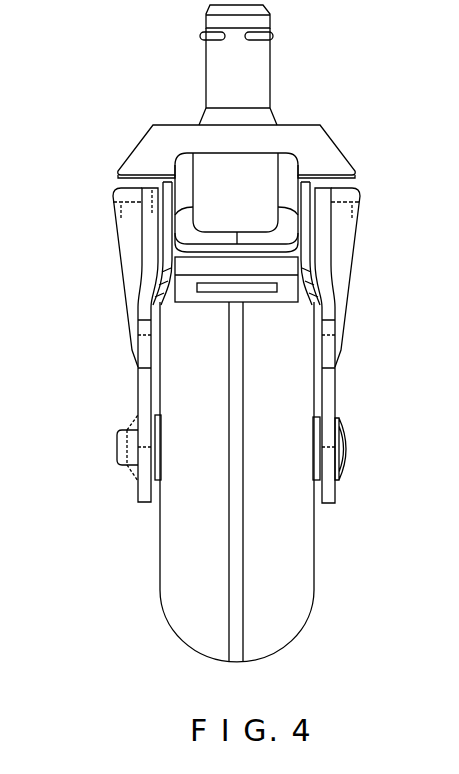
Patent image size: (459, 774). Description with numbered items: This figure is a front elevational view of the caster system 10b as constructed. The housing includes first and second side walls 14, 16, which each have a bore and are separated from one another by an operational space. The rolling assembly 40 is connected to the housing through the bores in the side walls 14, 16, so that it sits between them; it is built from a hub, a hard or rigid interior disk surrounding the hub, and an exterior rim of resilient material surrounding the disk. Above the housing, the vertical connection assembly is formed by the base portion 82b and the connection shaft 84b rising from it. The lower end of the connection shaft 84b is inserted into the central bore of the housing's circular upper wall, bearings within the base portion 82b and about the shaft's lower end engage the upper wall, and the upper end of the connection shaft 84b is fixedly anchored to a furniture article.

The caster system 10b is at (110, 83).
The connection shaft 84b is at (225, 62).
The base portion 82b is at (152, 137).
The first side wall 14 is at (142, 391).
The second side wall 16 is at (330, 394).
The rolling assembly 40 is at (152, 545).